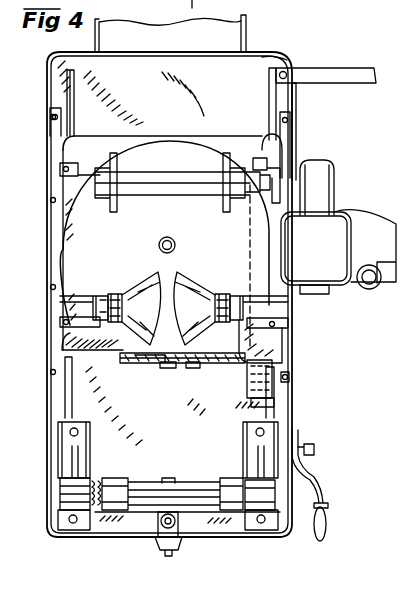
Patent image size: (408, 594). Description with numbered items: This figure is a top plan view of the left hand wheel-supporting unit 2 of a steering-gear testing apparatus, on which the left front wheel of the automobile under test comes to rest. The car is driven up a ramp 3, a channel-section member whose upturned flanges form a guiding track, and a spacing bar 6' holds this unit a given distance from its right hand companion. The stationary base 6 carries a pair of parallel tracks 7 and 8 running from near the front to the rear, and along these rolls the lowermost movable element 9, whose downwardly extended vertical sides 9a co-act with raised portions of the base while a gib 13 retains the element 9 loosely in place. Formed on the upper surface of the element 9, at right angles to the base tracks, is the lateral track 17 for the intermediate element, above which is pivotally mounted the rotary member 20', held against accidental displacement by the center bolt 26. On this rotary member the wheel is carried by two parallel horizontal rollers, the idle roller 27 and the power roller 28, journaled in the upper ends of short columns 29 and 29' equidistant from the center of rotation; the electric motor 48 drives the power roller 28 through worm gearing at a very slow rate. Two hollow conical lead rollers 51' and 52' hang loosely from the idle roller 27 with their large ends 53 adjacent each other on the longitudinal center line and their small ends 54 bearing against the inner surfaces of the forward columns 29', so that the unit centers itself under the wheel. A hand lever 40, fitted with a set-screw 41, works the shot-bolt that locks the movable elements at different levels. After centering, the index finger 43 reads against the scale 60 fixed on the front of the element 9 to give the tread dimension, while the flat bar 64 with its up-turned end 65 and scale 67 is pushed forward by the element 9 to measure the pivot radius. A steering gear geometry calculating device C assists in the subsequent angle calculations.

The left hand unit 2 is at (256, 104).
The ramp 3 is at (246, 37).
The stationary base 6 is at (289, 49).
The spacing bar 6' is at (326, 65).
The track 7 is at (72, 70).
The track 8 is at (272, 97).
The movable element 9 is at (274, 153).
The vertical sides 9a is at (60, 264).
The gib 13 is at (52, 125).
The track 17 is at (60, 140).
The rotary member 20' is at (143, 233).
The center bolt 26 is at (176, 242).
The idle roller 27 is at (108, 299).
The power roller 28 is at (143, 180).
The column 29 is at (149, 153).
The column 29' is at (186, 328).
The hand lever 40 is at (303, 475).
The set-screw 41 is at (316, 449).
The index finger 43 is at (168, 368).
The electric motor 48 is at (330, 238).
The lead roller 51' is at (120, 349).
The lead roller 52' is at (195, 383).
The large ends 53 is at (163, 278).
The small ends 54 is at (117, 292).
The scale 60 is at (140, 364).
The flat bar 64 is at (262, 380).
The up-turned end 65 is at (270, 393).
The scale 67 is at (262, 370).
The steering gear geometry calculating device C is at (186, 547).